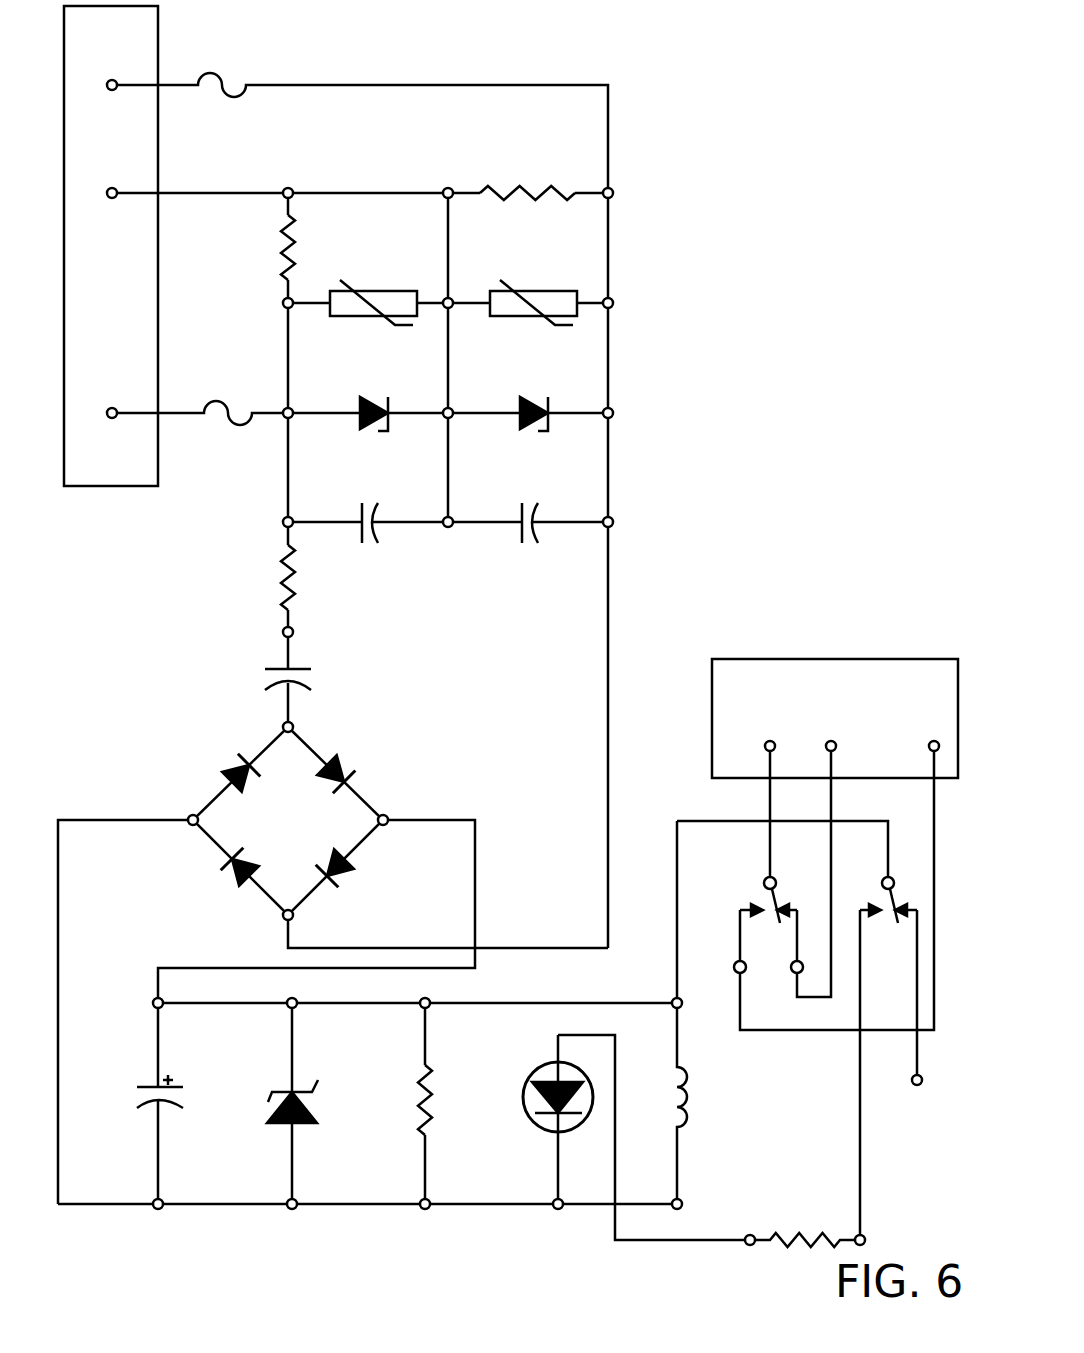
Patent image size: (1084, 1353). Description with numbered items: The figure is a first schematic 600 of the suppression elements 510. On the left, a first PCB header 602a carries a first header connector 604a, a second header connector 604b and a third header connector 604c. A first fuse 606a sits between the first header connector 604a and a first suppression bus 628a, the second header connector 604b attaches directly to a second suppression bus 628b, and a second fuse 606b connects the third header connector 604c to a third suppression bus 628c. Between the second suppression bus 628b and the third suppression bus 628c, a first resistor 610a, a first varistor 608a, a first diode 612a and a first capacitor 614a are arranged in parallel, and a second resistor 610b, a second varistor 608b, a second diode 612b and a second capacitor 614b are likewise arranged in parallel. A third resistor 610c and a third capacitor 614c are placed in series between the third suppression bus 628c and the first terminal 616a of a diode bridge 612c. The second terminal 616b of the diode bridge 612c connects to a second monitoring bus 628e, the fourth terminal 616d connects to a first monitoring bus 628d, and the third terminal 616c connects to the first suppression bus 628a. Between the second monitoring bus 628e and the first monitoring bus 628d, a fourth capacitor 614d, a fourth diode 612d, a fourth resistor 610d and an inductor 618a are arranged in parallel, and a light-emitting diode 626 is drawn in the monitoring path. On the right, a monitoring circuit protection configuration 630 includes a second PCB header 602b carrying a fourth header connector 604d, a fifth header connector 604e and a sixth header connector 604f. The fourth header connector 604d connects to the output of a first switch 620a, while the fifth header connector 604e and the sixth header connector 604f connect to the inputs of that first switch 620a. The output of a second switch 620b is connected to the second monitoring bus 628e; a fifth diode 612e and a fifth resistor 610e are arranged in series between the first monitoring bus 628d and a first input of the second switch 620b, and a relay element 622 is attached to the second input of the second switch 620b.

The first schematic 600 is at (499, 647).
The suppression elements 510 is at (775, 185).
The first PCB header 602a is at (111, 246).
The second PCB header 602b is at (835, 718).
The first header connector 604a is at (124, 103).
The second header connector 604b is at (124, 211).
The third header connector 604c is at (124, 431).
The fourth header connector 604d is at (769, 790).
The fifth header connector 604e is at (824, 849).
The sixth header connector 604f is at (847, 866).
The first fuse 606a is at (223, 65).
The second fuse 606b is at (223, 392).
The first varistor 608a is at (373, 281).
The second varistor 608b is at (533, 281).
The first resistor 610a is at (264, 247).
The second resistor 610b is at (527, 169).
The third resistor 610c is at (265, 586).
The fourth resistor 610d is at (401, 1103).
The fifth resistor 610e is at (805, 1216).
The first diode 612a is at (374, 393).
The second diode 612b is at (532, 393).
The diode bridge 612c is at (221, 805).
The fourth diode 612d is at (265, 1103).
The fifth diode 612e is at (610, 1137).
The first capacitor 614a is at (370, 500).
The second capacitor 614b is at (529, 500).
The third capacitor 614c is at (263, 679).
The fourth capacitor 614d is at (134, 1103).
The first terminal 616a is at (296, 711).
The second terminal 616b is at (379, 800).
The third terminal 616c is at (265, 930).
The fourth terminal 616d is at (169, 836).
The inductor 618a is at (718, 1012).
The first switch 620a is at (762, 912).
The second switch 620b is at (877, 887).
The K1 622 is at (917, 1099).
The LED 626 is at (558, 1229).
The first suppression bus 628a is at (537, 85).
The second suppression bus 628b is at (412, 193).
The third suppression bus 628c is at (288, 468).
The first monitoring bus 628d is at (225, 1204).
The second monitoring bus 628e is at (507, 1003).
The monitoring circuit protection configuration 630 is at (655, 740).